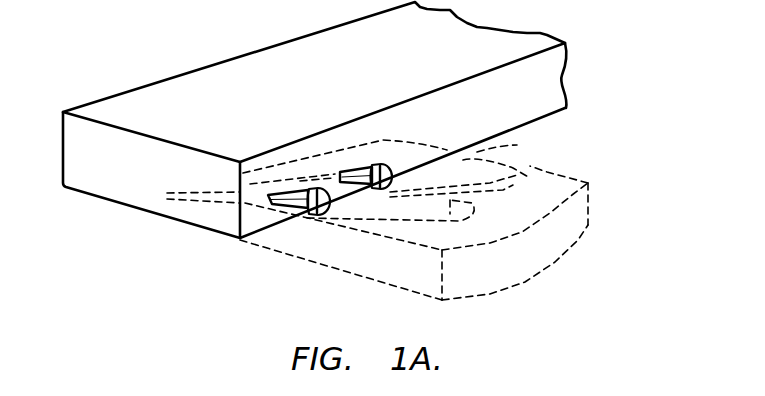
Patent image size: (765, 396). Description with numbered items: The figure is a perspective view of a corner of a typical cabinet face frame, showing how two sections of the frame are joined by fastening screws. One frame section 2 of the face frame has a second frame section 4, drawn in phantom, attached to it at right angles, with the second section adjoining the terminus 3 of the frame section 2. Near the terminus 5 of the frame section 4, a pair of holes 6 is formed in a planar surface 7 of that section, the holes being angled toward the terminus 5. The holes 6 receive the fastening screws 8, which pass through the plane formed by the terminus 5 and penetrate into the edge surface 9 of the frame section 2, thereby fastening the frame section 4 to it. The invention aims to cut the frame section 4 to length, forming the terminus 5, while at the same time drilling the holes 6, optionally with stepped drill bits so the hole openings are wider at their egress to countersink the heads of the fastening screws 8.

The frame section 2 is at (197, 67).
The terminus 3 is at (126, 173).
The second frame section 4 is at (548, 170).
The terminus 5 is at (366, 145).
The holes 6 is at (517, 145).
The planar surface 7 is at (505, 234).
The fastening screws 8 is at (376, 191).
The edge surface 9 is at (527, 90).